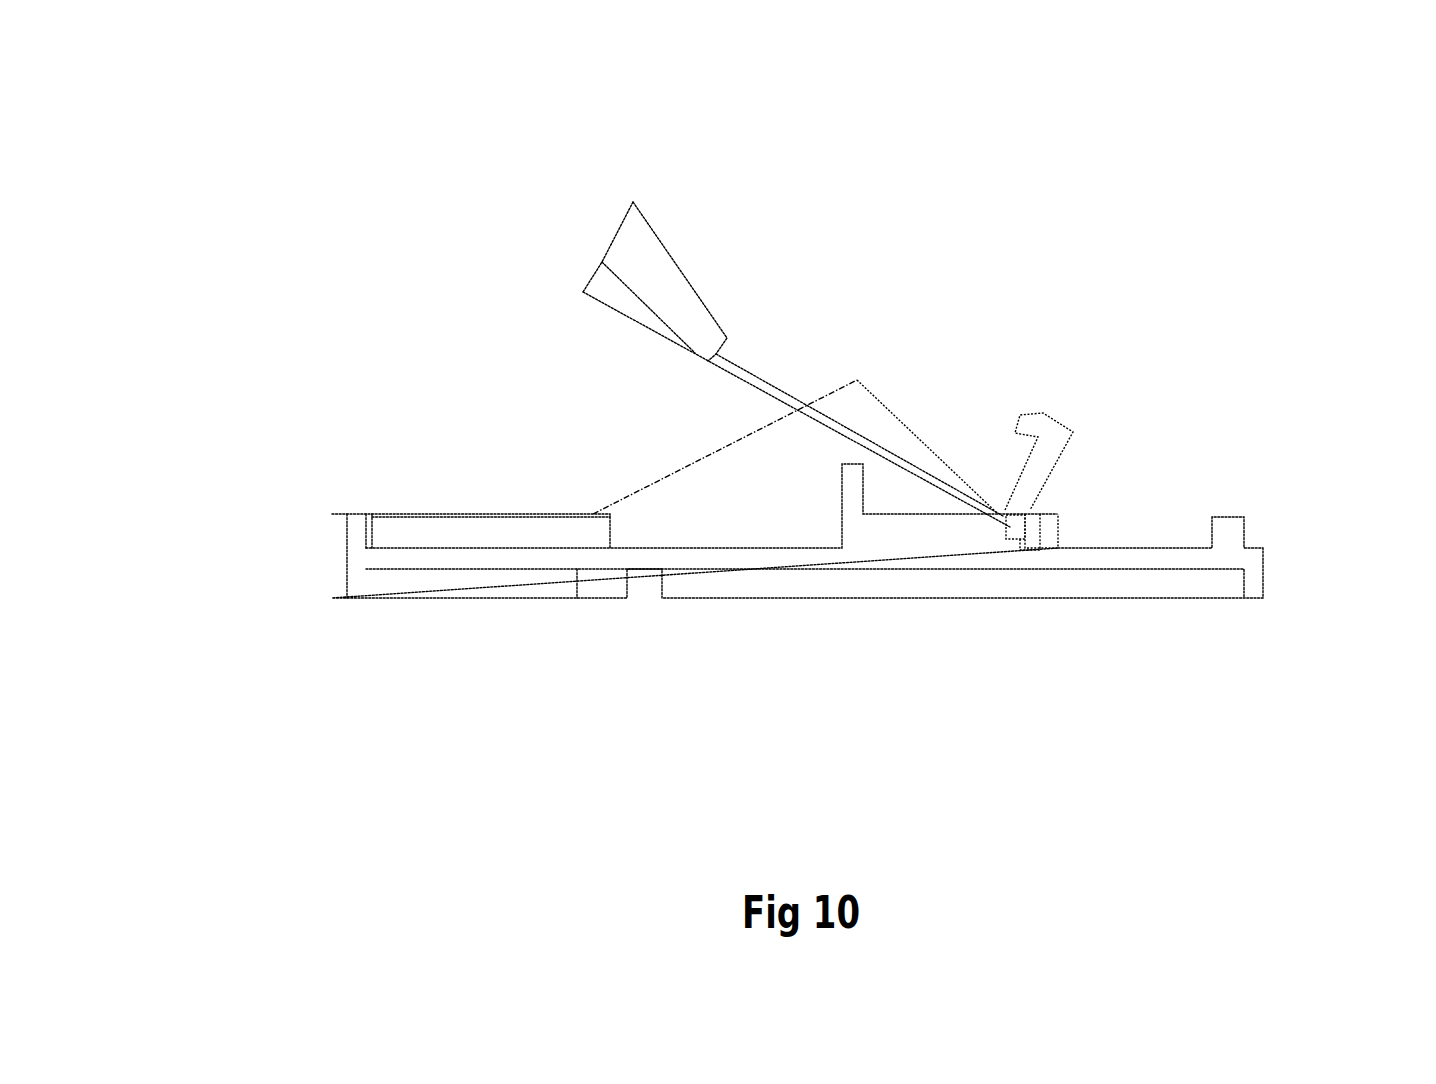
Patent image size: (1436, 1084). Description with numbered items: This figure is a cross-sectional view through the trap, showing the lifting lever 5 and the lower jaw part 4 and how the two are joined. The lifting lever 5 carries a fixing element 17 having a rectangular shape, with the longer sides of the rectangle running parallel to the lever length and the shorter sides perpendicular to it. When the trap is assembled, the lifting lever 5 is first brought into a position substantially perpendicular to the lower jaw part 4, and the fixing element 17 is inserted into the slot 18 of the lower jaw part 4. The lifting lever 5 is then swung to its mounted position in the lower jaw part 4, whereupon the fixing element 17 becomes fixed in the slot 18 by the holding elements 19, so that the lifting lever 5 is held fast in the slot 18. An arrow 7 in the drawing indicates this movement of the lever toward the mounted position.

The lower jaw part 4 is at (323, 547).
The lifting lever 5 is at (748, 373).
The direction arrow 7 is at (1050, 413).
The fixing element 17 is at (1030, 535).
The slot 18 is at (1037, 547).
The holding elements 19 is at (1010, 512).